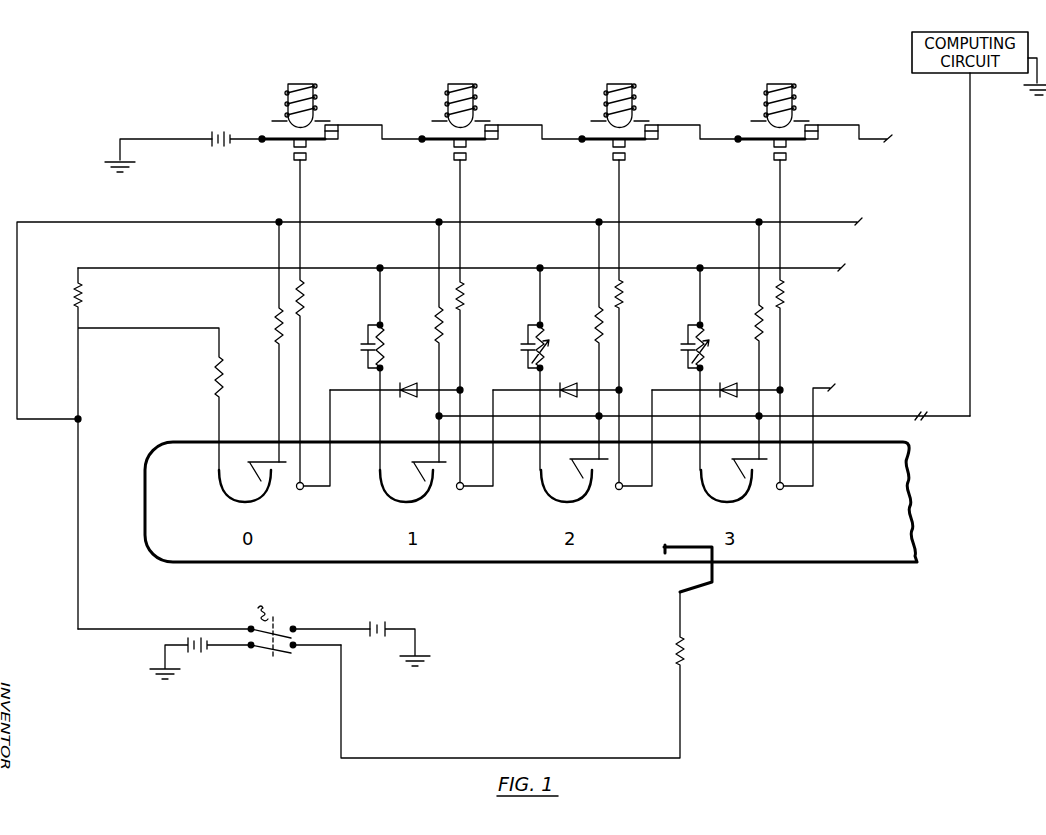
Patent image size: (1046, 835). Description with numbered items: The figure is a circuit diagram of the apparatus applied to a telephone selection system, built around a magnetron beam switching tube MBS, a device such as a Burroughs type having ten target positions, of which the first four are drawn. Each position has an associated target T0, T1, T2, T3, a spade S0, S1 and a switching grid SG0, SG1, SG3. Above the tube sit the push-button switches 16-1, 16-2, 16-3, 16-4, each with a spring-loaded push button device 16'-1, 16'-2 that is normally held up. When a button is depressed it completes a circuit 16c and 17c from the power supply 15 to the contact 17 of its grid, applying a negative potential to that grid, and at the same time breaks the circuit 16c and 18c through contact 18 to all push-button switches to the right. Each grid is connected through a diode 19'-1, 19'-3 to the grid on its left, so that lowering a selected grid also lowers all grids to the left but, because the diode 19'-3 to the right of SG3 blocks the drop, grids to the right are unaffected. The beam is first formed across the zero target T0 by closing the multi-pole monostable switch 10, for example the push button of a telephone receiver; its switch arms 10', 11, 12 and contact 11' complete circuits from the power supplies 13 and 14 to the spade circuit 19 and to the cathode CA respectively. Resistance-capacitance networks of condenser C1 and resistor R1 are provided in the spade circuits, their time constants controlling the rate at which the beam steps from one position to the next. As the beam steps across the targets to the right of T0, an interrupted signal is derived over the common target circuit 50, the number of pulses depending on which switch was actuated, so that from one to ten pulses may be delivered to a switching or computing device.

The power supply 15 is at (233, 138).
The switch arm circuit 16c is at (267, 144).
The push-button switch 16-1 is at (300, 84).
The push button device 16'-1 is at (338, 95).
The switch contact 18 is at (338, 125).
The grid contact 17 is at (307, 154).
The grid circuit 17c is at (301, 208).
The right-hand switch circuit 18c is at (408, 141).
The push-button switch 16-2 is at (459, 84).
The push button device 16'-2 is at (496, 95).
The push-button switch 16-3 is at (619, 84).
The push-button switch 16-4 is at (782, 84).
The spade circuit 19 is at (461, 254).
The diode 19'-1 is at (395, 376).
The diode 19'-3 is at (716, 376).
The resistor R1 is at (634, 346).
The condenser C1 is at (681, 347).
The common target circuit 50 is at (703, 403).
The magnetron beam switching tube MBS is at (852, 564).
The spade S0 is at (231, 498).
The spade S1 is at (394, 498).
The zero target T0 is at (256, 476).
The target T1 is at (413, 470).
The target T2 is at (574, 480).
The target T3 is at (734, 480).
The switching grid SG0 is at (300, 492).
The switching grid SG1 is at (462, 492).
The switching grid SG3 is at (783, 492).
The cathode CA is at (700, 588).
The multi-pole monostable switch 10 is at (258, 645).
The switch arm 10' is at (284, 615).
The switch arm 11 is at (293, 640).
The switch contact 11' is at (315, 659).
The switch arm 12 is at (300, 630).
The power supply 13 is at (379, 625).
The power supply 14 is at (208, 651).